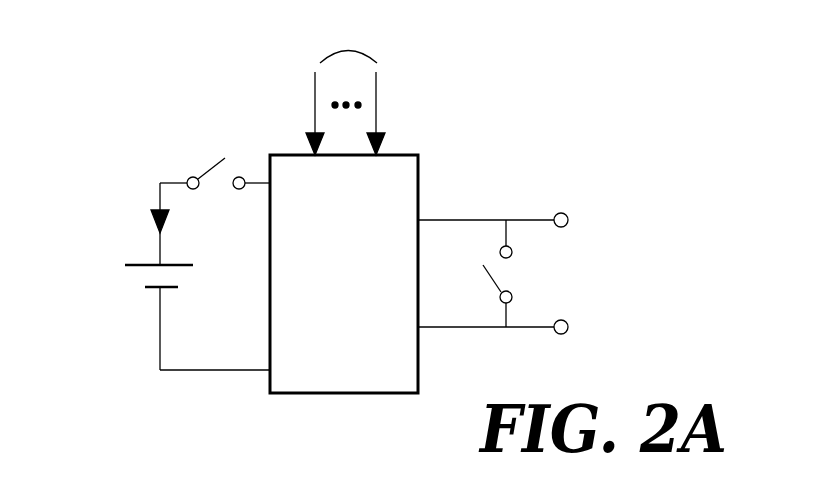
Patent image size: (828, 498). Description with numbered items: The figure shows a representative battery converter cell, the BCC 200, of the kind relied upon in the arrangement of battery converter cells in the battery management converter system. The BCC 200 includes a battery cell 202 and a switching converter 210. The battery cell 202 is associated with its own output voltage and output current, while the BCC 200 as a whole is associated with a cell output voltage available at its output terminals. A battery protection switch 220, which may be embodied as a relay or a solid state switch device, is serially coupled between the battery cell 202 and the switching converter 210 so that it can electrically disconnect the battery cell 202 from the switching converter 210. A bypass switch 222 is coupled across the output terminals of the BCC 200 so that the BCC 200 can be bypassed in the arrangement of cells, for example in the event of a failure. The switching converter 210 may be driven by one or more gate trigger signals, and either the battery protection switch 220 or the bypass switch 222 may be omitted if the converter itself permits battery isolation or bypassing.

The battery converter cell 200 is at (92, 131).
The battery cell 202 is at (152, 289).
The switching converter 210 is at (420, 173).
The battery protection switch 220 is at (217, 172).
The bypass switch 222 is at (494, 283).